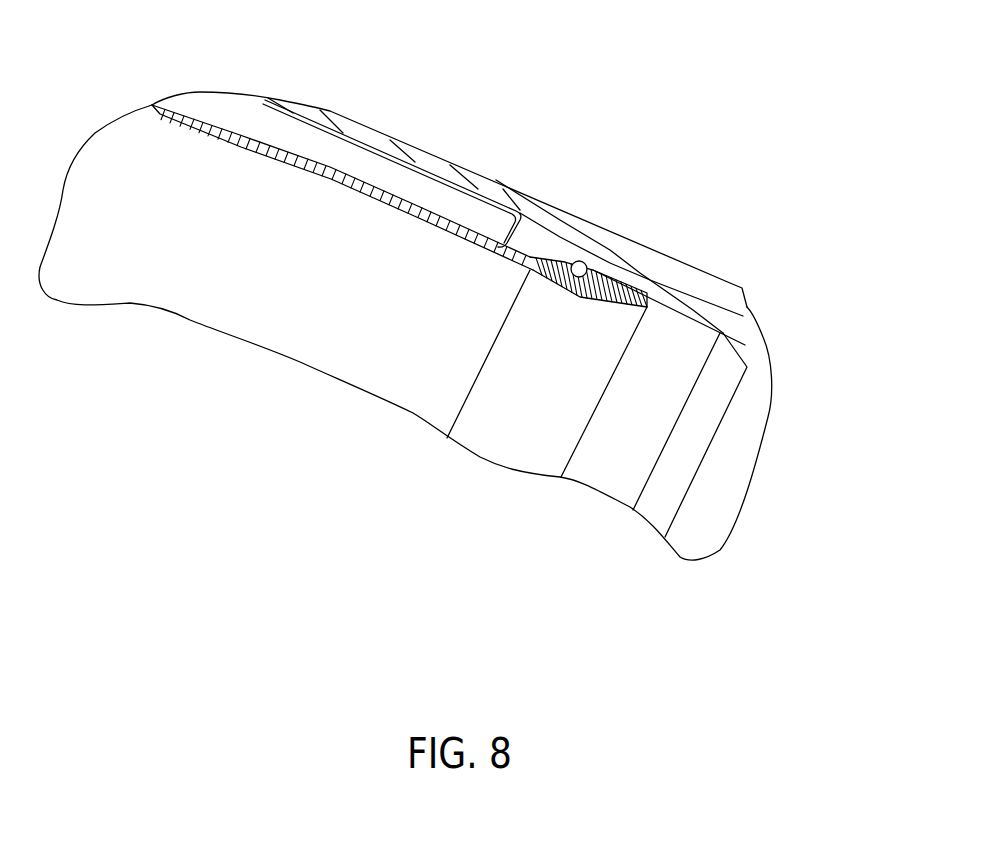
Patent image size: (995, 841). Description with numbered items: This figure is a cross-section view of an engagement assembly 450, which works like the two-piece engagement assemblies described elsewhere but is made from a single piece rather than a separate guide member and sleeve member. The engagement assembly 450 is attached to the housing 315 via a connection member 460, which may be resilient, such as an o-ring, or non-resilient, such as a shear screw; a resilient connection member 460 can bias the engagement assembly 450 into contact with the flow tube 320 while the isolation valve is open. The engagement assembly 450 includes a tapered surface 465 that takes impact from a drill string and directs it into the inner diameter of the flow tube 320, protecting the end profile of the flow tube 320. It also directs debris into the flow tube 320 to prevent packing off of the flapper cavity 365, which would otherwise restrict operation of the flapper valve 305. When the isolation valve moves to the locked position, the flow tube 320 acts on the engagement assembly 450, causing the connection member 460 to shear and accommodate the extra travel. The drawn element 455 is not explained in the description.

The pocket region 305 is at (385, 178).
The flap layer 315 is at (545, 222).
The hatched strip 320 is at (331, 172).
The membrane layer 365 is at (500, 197).
The direction arrow 450 is at (571, 316).
The curved path 455 is at (745, 328).
The anchor element 460 is at (588, 268).
The channel 465 is at (703, 357).